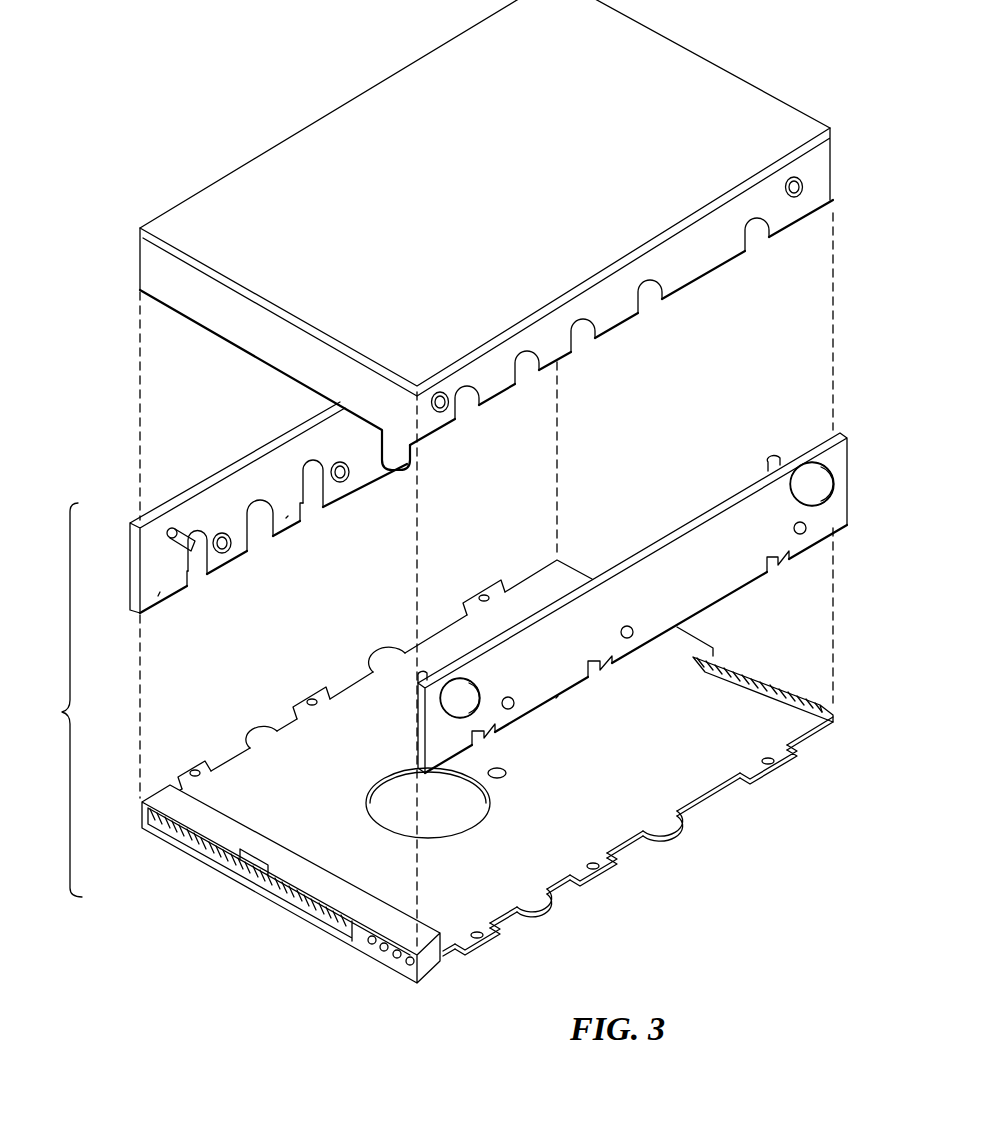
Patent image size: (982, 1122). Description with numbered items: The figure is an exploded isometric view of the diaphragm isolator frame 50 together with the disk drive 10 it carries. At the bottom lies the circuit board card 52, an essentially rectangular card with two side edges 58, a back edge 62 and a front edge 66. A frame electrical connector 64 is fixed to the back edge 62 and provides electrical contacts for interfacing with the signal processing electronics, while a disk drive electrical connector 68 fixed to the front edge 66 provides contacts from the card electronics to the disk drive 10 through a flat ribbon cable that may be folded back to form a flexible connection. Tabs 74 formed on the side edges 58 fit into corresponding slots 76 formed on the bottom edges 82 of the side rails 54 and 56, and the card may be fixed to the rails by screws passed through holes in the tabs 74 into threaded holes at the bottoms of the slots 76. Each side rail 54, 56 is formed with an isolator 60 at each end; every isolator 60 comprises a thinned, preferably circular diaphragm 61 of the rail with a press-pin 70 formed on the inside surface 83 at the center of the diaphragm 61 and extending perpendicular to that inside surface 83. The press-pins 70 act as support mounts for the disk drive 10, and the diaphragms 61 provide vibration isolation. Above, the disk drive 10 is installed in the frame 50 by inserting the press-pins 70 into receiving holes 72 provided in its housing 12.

The disk drive 10 is at (508, 241).
The housing 12 is at (508, 241).
The diaphragm isolator frame 50 is at (463, 704).
The circuit board card 52 is at (644, 750).
The side rail 54 is at (130, 553).
The side rail 56 is at (847, 503).
The side edges 58 is at (270, 733).
The isolator 60 is at (840, 470).
The diaphragm 61 is at (807, 489).
The back edge 62 is at (378, 963).
The frame electrical connector 64 is at (258, 893).
The front edge 66 is at (700, 637).
The disk drive electrical connector 68 is at (777, 677).
The press-pin 70 is at (193, 540).
The receiving holes 72 is at (806, 183).
The tabs 74 is at (478, 590).
The slots 76 is at (190, 580).
The bottom edges 82 is at (287, 517).
The inside surface 83 is at (160, 594).